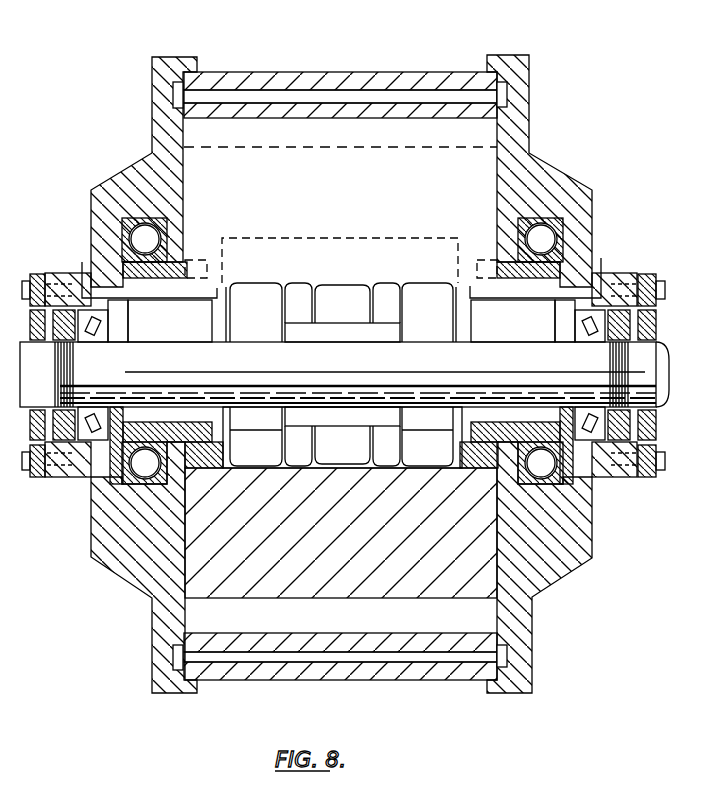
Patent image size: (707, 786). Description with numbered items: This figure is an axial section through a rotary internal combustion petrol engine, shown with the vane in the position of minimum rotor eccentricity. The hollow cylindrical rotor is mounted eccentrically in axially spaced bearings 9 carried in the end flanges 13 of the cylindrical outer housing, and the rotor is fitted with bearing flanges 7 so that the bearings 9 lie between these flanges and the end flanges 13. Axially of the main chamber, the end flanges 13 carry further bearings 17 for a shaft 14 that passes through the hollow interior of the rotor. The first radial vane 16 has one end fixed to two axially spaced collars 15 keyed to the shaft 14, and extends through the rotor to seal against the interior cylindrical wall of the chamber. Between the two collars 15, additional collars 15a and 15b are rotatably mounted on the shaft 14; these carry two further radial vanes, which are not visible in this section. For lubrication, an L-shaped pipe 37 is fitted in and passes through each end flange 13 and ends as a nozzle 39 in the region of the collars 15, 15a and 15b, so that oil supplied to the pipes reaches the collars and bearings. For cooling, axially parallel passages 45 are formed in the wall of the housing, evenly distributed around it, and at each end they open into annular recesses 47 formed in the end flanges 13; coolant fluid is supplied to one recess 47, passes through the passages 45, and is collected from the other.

The bearing flange 7 is at (156, 272).
The bearing 9 is at (563, 232).
The end flange 13 is at (594, 198).
The shaft 14 is at (349, 369).
The collar 15 is at (262, 316).
The additional collar 15a is at (301, 300).
The additional collar 15b is at (342, 374).
The first radial vane 16 is at (387, 117).
The further bearing 17 is at (92, 340).
The L-shaped pipe 37 is at (82, 262).
The nozzle 39 is at (215, 283).
The axially parallel passage 45 is at (252, 94).
The annular recess 47 is at (176, 82).